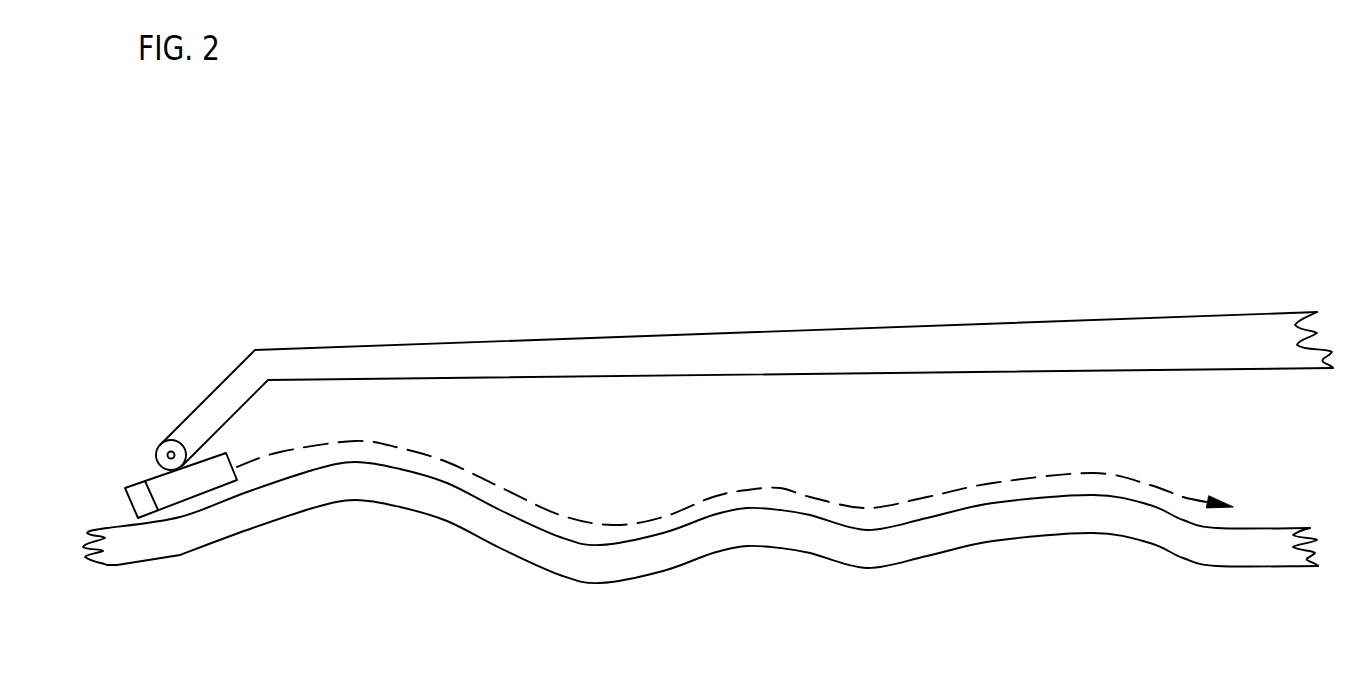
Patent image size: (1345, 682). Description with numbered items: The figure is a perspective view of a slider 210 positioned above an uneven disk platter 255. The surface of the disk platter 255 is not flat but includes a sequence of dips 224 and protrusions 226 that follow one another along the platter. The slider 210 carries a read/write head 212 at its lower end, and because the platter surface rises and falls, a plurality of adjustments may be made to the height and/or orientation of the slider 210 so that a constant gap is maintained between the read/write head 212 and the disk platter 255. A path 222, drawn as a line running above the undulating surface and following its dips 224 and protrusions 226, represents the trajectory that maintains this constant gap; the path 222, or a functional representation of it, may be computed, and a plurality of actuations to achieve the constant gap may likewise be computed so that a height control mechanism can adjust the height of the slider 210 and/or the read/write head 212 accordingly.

The slider 210 is at (150, 480).
The read/write head 212 is at (137, 487).
The path 222 is at (1043, 473).
The dips 224 is at (595, 537).
The protrusions 226 is at (407, 467).
The disk platter 255 is at (920, 555).